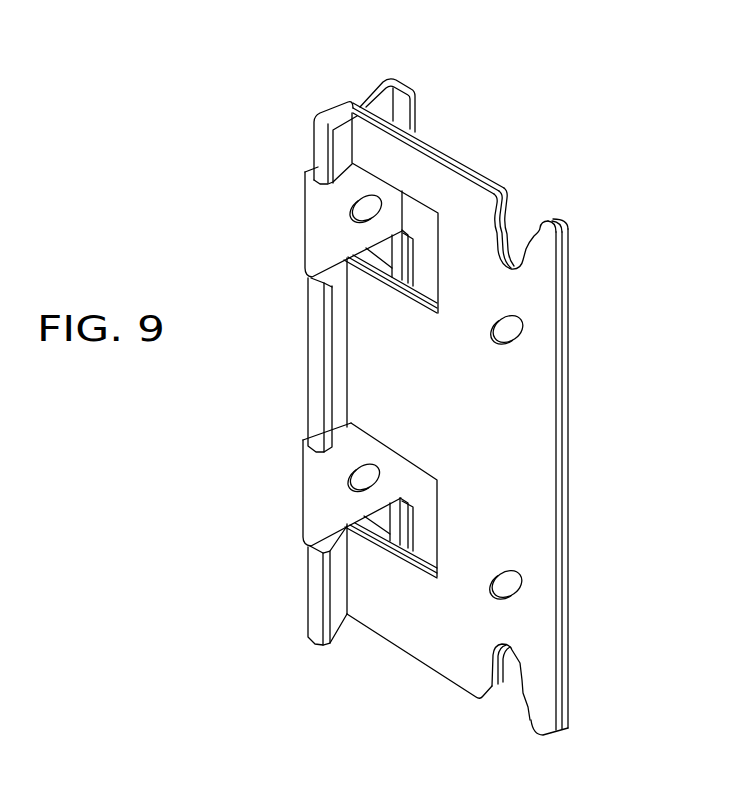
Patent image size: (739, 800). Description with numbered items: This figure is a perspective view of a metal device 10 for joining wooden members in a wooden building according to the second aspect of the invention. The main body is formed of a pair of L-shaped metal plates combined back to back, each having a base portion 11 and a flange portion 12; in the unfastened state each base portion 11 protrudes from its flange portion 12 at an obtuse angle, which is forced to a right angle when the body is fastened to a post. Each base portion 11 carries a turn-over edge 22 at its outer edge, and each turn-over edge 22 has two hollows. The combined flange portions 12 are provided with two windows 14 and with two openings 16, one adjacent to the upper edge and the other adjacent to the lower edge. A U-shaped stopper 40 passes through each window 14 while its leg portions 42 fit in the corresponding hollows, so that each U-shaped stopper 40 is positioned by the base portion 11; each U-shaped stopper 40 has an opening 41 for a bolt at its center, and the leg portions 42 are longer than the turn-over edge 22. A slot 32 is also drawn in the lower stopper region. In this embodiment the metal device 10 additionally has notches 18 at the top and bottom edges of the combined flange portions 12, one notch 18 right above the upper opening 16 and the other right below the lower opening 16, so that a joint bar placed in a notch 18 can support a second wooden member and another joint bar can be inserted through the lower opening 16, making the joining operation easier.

The metal device 10 is at (598, 365).
The base portion 11 is at (377, 87).
The flange portion 12 is at (535, 418).
The window 14 is at (398, 248).
The opening 16 is at (522, 330).
The notch 18 is at (517, 253).
The turn-over edge 22 is at (412, 90).
The slot 32 is at (398, 522).
The U-shaped stopper 40 is at (317, 243).
The opening for bolt 41 is at (352, 203).
The leg portion 42 is at (305, 172).